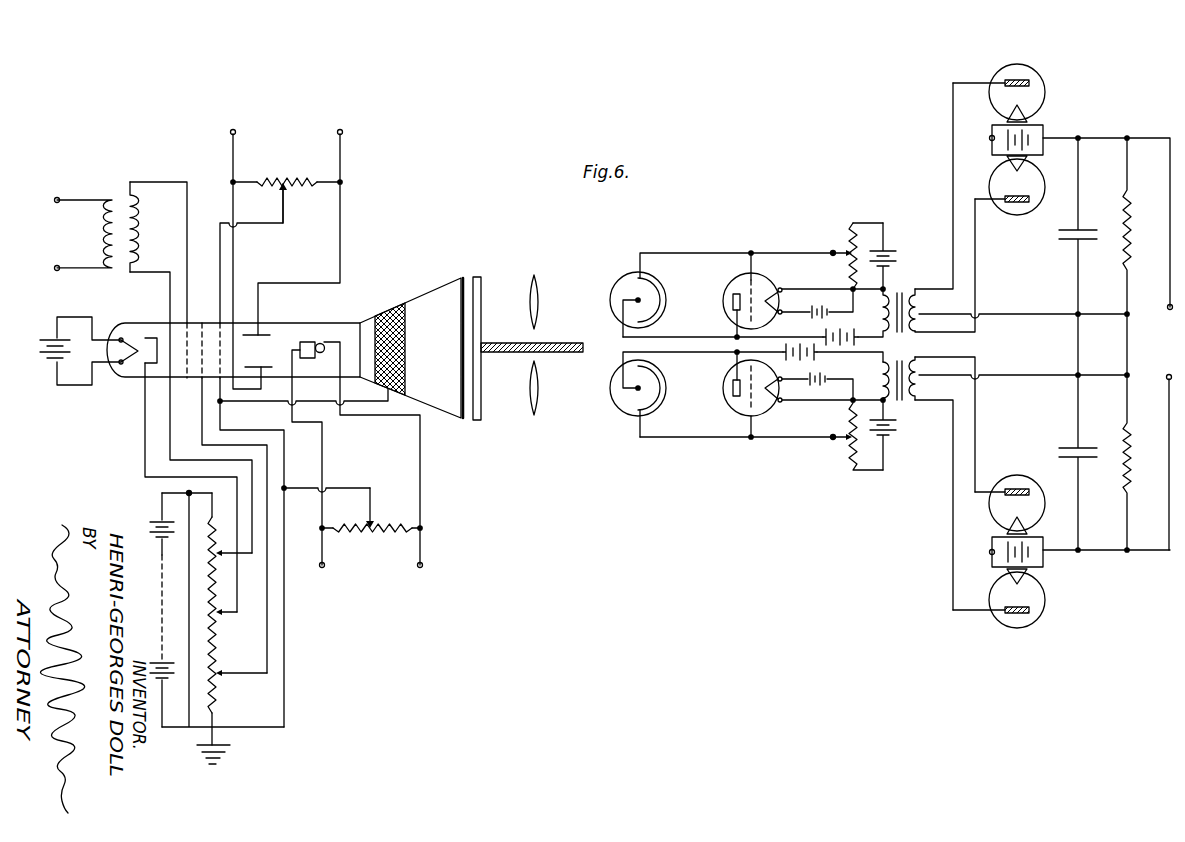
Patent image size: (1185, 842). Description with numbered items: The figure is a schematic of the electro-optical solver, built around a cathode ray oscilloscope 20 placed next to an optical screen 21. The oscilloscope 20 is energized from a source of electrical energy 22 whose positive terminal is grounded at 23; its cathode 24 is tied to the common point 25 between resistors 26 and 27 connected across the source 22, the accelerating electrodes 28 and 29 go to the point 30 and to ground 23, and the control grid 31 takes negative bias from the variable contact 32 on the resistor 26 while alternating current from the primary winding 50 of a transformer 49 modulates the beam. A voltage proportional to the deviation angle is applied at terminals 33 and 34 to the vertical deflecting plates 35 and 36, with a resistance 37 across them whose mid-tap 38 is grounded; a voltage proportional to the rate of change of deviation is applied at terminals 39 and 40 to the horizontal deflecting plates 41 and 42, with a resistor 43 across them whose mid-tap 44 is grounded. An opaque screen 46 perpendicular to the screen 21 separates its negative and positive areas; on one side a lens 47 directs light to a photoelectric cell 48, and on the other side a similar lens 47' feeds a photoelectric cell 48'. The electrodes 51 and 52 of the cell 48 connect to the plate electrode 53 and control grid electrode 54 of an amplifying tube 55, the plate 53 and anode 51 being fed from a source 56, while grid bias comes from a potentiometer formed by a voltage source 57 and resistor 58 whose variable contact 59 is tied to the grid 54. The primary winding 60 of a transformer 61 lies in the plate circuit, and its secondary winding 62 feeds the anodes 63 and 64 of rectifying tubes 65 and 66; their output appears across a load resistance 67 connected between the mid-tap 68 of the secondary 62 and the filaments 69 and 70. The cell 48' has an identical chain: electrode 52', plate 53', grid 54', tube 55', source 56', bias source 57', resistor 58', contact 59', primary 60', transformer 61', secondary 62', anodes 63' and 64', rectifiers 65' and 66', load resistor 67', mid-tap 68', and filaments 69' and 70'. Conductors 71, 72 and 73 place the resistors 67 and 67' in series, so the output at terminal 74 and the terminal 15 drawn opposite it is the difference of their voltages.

The output terminal 15 is at (1167, 376).
The cathode ray oscilloscope 20 is at (408, 299).
The optical screen 21 is at (482, 283).
The source of electrical energy 22 is at (155, 610).
The ground 23 is at (233, 760).
The cathode 24 is at (152, 338).
The common point 25 is at (222, 615).
The resistor 26 is at (202, 488).
The resistor 27 is at (222, 668).
The accelerating electrode 28 is at (203, 323).
The accelerating electrode 29 is at (222, 322).
The point 30 is at (222, 675).
The control grid 31 is at (186, 380).
The variable contact 32 is at (222, 550).
The terminal 33 is at (325, 565).
The terminal 34 is at (423, 565).
The vertical deflecting plate 35 is at (306, 342).
The vertical deflecting plate 36 is at (324, 341).
The resistance 37 is at (371, 514).
The mid-tap 38 is at (373, 506).
The terminal 39 is at (236, 131).
The terminal 40 is at (343, 131).
The horizontal deflecting plate 41 is at (265, 384).
The horizontal deflecting plate 42 is at (264, 333).
The resistor 43 is at (285, 181).
The mid-tap 44 is at (286, 192).
The opaque screen 46 is at (493, 353).
The lens 47 is at (540, 287).
The lens 47' is at (540, 410).
The photoelectric cell 48 is at (623, 287).
The photoelectric cell 48' is at (618, 398).
The transformer 49 is at (112, 198).
The primary winding 50 is at (141, 222).
The anode 51 is at (636, 299).
The electrode 52 is at (659, 289).
The electrode 52' is at (615, 401).
The plate electrode 53 is at (715, 314).
The plate electrode 53' is at (715, 374).
The control grid electrode 54 is at (806, 289).
The control grid electrode 54' is at (771, 393).
The electronic amplifying tube 55 is at (737, 295).
The electronic amplifying tube 55' is at (736, 395).
The source 56 is at (870, 342).
The source 56' is at (826, 360).
The source of voltage 57 is at (897, 250).
The source of voltage 57' is at (899, 436).
The resistor 58 is at (866, 241).
The resistor 58' is at (856, 451).
The variable contact 59 is at (831, 232).
The variable contact 59' is at (824, 453).
The primary winding 60 is at (895, 294).
The primary winding 60' is at (846, 394).
The transformer 61 is at (928, 301).
The transformer 61' is at (914, 396).
The secondary winding 62 is at (1024, 307).
The secondary winding 62' is at (938, 496).
The anode 63 is at (998, 58).
The anode 63' is at (1002, 468).
The anode 64 is at (1002, 223).
The anode 64' is at (991, 637).
The rectifying tube 65 is at (1037, 85).
The rectifying tube 65' is at (1031, 499).
The rectifying tube 66 is at (1029, 189).
The rectifying tube 66' is at (1035, 603).
The load resistance 67 is at (1141, 226).
The output resistor 67' is at (1143, 462).
The mid-tap 68 is at (945, 267).
The mid-tap 68' is at (1024, 372).
The filament 69 is at (1046, 105).
The filament 69' is at (1040, 520).
The filament 70 is at (1029, 151).
The filament 70' is at (1037, 564).
The conductor 71 is at (1158, 132).
The conductor 72 is at (1126, 346).
The conductor 73 is at (1158, 552).
The terminal 74 is at (1168, 308).